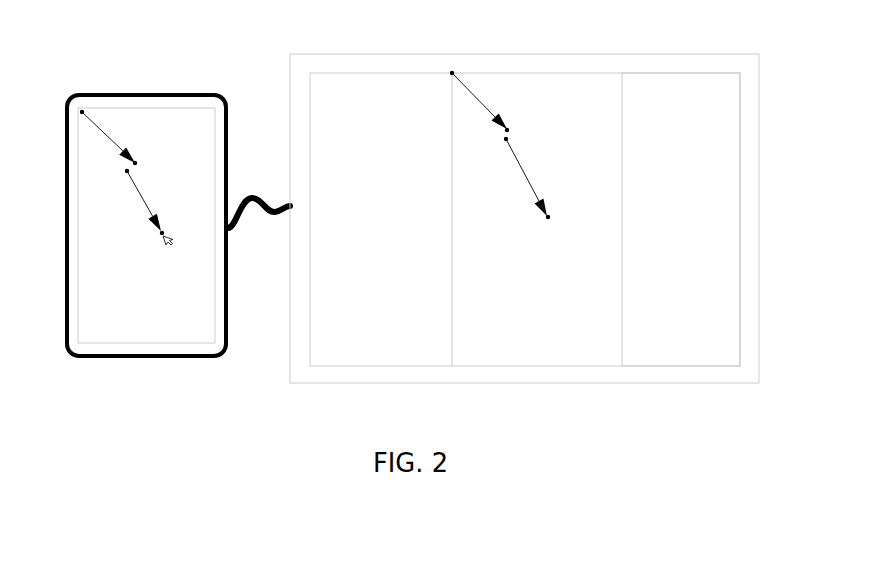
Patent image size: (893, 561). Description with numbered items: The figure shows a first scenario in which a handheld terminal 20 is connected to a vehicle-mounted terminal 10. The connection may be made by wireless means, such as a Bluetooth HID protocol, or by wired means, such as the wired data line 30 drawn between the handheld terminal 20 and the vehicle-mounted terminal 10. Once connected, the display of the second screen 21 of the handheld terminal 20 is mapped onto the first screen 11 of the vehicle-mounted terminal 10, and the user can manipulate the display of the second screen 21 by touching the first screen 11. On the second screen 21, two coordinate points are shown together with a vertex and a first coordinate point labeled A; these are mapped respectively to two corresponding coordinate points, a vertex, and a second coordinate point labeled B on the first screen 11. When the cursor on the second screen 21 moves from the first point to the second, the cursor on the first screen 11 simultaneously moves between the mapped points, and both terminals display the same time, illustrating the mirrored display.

The vehicle-mounted terminal 10 is at (524, 197).
The first screen 11 is at (681, 219).
The handheld terminal 20 is at (146, 204).
The second screen 21 is at (146, 225).
The wired data line 30 is at (260, 199).